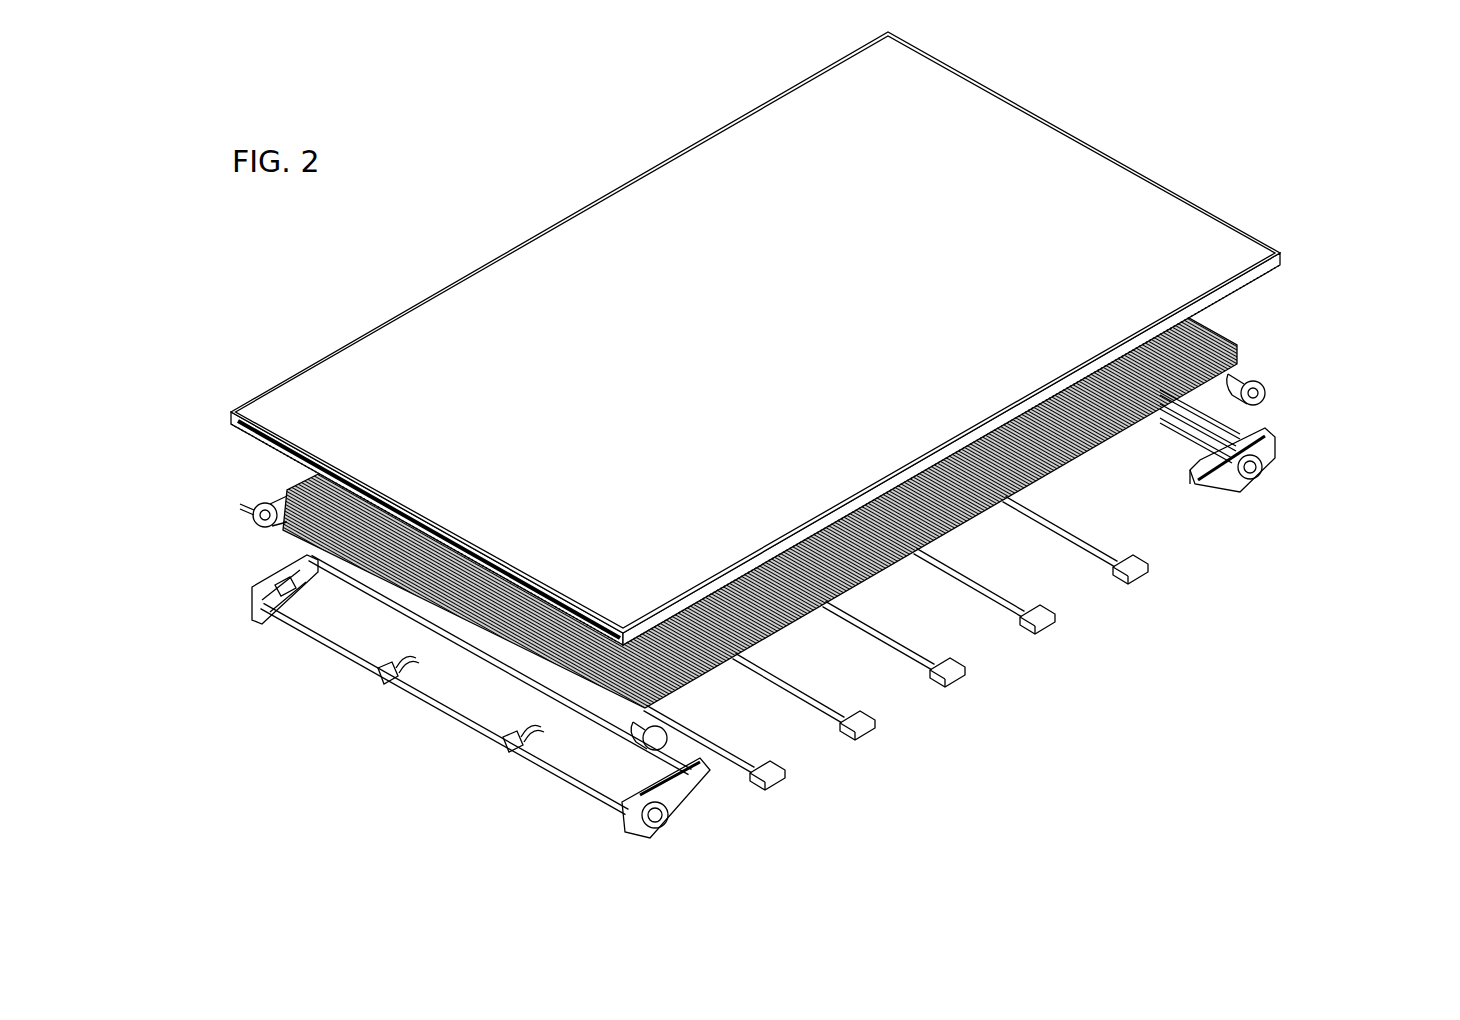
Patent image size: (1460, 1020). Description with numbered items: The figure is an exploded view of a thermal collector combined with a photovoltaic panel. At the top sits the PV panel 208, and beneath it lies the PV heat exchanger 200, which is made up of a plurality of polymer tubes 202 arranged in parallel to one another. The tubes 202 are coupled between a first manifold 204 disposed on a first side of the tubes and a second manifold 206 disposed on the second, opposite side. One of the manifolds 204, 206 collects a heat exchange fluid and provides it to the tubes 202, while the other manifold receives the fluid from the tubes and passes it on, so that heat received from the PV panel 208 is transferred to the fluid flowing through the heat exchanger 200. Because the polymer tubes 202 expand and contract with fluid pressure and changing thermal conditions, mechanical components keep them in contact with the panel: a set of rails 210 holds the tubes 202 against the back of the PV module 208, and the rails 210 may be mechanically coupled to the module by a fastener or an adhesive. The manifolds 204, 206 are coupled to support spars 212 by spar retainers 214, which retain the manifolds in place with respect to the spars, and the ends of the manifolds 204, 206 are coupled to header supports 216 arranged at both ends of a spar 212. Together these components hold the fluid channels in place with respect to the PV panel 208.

The PV heat exchanger 200 is at (1246, 335).
The polymer tubes 202 is at (1053, 466).
The first manifold 204 is at (252, 511).
The second manifold 206 is at (1262, 392).
The PV panel 208 is at (1082, 134).
The rails 210 is at (1148, 578).
The support spars 212 is at (317, 655).
The spar retainers 214 is at (502, 750).
The header supports 216 is at (1283, 440).